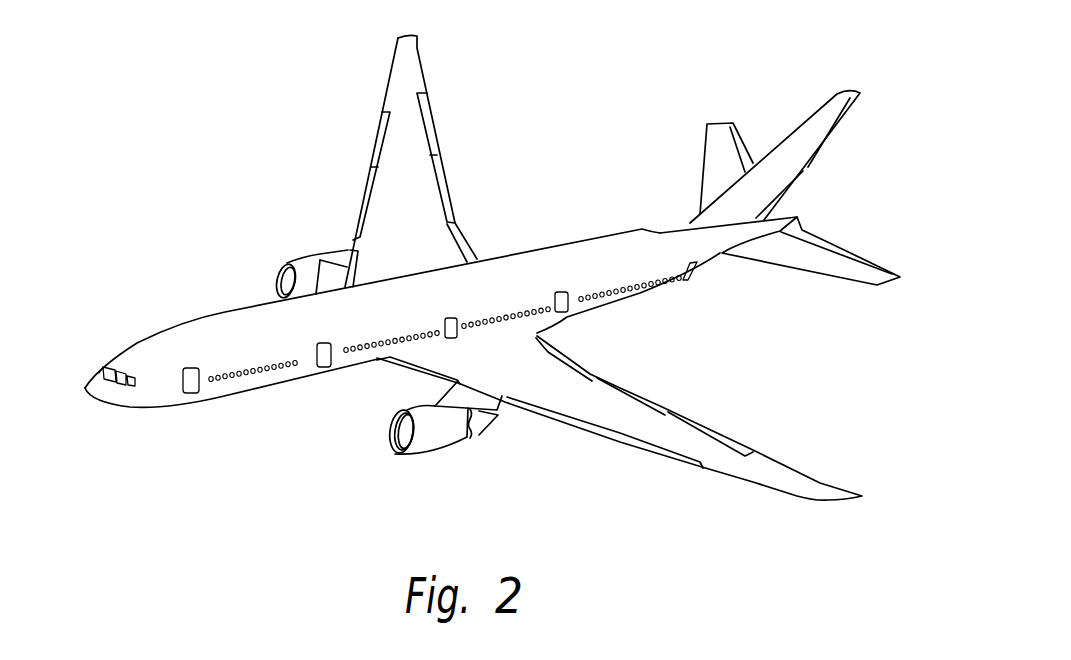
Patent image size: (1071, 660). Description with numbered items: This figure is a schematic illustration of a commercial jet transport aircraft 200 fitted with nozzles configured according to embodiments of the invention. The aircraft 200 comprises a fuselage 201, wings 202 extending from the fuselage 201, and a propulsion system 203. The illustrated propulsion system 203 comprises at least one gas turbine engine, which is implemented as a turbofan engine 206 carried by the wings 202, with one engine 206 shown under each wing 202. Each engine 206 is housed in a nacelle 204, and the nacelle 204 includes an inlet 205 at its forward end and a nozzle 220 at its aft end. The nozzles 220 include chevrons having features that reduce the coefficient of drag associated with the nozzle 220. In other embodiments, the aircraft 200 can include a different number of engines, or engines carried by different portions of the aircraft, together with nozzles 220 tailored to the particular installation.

The aircraft 200 is at (104, 265).
The fuselage 201 is at (242, 313).
The wings 202 is at (408, 197).
The propulsion system 203 is at (436, 478).
The nacelle 204 is at (455, 437).
The inlet 205 is at (393, 452).
The turbofan engine 206 is at (301, 264).
The nozzle 220 is at (487, 423).